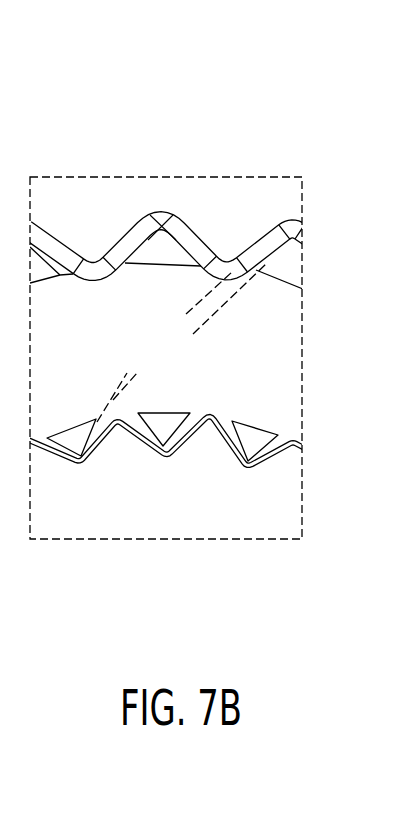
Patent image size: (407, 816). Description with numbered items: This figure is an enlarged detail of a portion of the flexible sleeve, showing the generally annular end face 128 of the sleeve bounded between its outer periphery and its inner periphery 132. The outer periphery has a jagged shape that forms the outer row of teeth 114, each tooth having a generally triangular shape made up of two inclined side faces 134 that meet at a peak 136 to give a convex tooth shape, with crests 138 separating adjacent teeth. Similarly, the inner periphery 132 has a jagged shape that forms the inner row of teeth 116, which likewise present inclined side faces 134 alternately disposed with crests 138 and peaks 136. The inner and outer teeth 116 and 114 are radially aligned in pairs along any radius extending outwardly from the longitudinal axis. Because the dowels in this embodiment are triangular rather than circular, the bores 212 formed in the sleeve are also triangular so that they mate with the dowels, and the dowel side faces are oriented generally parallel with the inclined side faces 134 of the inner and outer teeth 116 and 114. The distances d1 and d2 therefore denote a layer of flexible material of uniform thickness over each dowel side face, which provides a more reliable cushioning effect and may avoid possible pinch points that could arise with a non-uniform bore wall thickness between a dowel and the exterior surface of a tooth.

The outer row of teeth 114 is at (318, 247).
The inner row of teeth 116 is at (313, 459).
The end face 128 is at (288, 323).
The inner periphery 132 is at (274, 470).
The inclined side faces 134 is at (118, 228).
The peak 136 is at (167, 192).
The crests 138 is at (98, 258).
The bores 212 is at (162, 263).
The minimum thickness d1 is at (178, 282).
The minimum thickness d2 is at (134, 398).